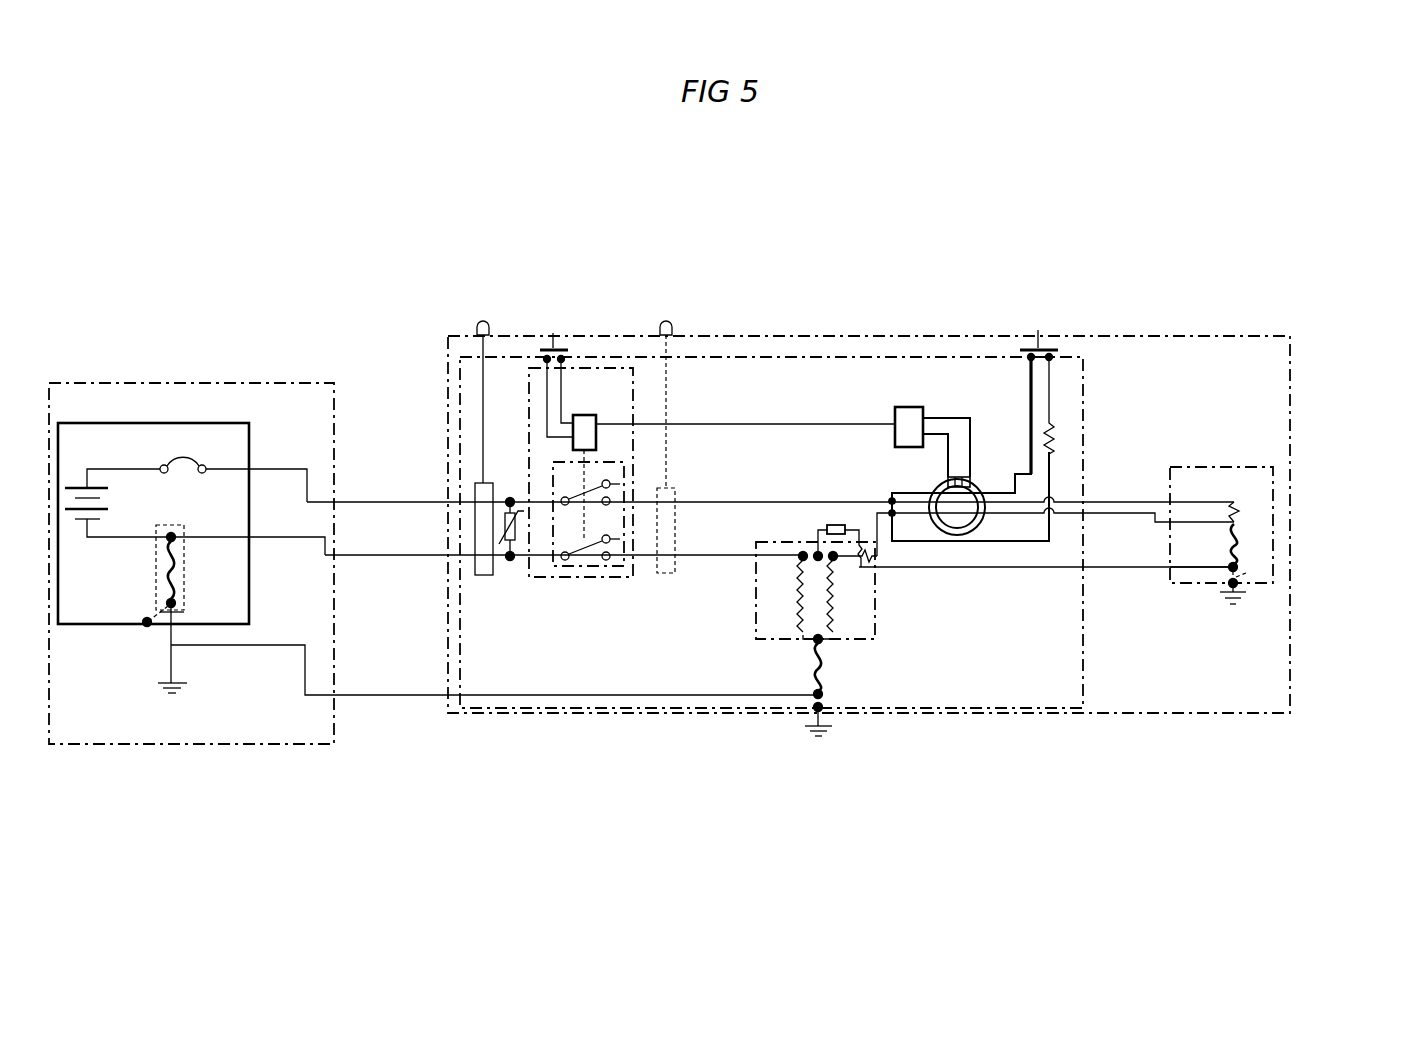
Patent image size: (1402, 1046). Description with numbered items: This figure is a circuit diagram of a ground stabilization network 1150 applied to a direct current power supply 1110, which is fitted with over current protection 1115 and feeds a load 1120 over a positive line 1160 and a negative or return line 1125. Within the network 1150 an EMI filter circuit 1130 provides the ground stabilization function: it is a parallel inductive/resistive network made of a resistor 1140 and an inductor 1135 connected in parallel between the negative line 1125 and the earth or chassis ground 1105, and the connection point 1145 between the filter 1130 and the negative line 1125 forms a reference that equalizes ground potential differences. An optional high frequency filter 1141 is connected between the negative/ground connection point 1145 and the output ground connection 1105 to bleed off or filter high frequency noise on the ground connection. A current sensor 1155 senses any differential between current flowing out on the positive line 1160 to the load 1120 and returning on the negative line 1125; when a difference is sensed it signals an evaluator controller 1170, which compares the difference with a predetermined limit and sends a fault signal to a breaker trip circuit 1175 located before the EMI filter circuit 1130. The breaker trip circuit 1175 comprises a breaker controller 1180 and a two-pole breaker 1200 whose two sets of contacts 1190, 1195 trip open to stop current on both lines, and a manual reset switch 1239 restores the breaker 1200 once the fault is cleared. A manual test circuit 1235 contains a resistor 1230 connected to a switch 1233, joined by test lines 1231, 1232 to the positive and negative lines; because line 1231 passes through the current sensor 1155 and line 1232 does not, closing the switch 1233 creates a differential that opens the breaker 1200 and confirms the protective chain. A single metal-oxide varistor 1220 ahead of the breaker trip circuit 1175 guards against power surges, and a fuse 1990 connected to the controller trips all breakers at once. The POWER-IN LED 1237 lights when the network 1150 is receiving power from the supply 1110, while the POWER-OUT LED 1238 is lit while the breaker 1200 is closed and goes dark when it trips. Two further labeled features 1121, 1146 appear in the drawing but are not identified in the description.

The earth/chassis ground 1105 is at (172, 706).
The direct current power supply 1110 is at (193, 375).
The over current protection 1115 is at (210, 463).
The load 1120 is at (1220, 455).
The protection device housing 1121 is at (822, 331).
The negative line 1125 is at (358, 562).
The EMI filter circuit 1130 is at (833, 657).
The inductor 1135 is at (777, 607).
The resistor 1140 is at (862, 598).
The high frequency filter 1141 is at (826, 518).
The grounded return point 1145 is at (800, 543).
The load ground connection 1146 is at (1243, 567).
The ground stabilization network 1150 is at (714, 353).
The current sensor 1155 is at (922, 484).
The positive line 1160 is at (362, 497).
The evaluator controller 1170 is at (903, 400).
The breaker trip circuit 1175 is at (541, 358).
The breaker controller 1180 is at (595, 410).
The breaker contacts 1190 is at (622, 483).
The breaker contacts 1195 is at (622, 547).
The two-pole breaker 1200 is at (633, 513).
The metal-oxide varistor 1220 is at (511, 574).
The resistor 1230 is at (1066, 420).
The test line 1231 is at (1000, 486).
The test line 1232 is at (1000, 546).
The switch 1233 is at (1062, 353).
The manual test circuit 1235 is at (1036, 325).
The POWER-IN LED 1237 is at (486, 316).
The POWER-OUT LED 1238 is at (664, 311).
The reset switch 1239 is at (553, 327).
The fuse 1990 is at (158, 577).